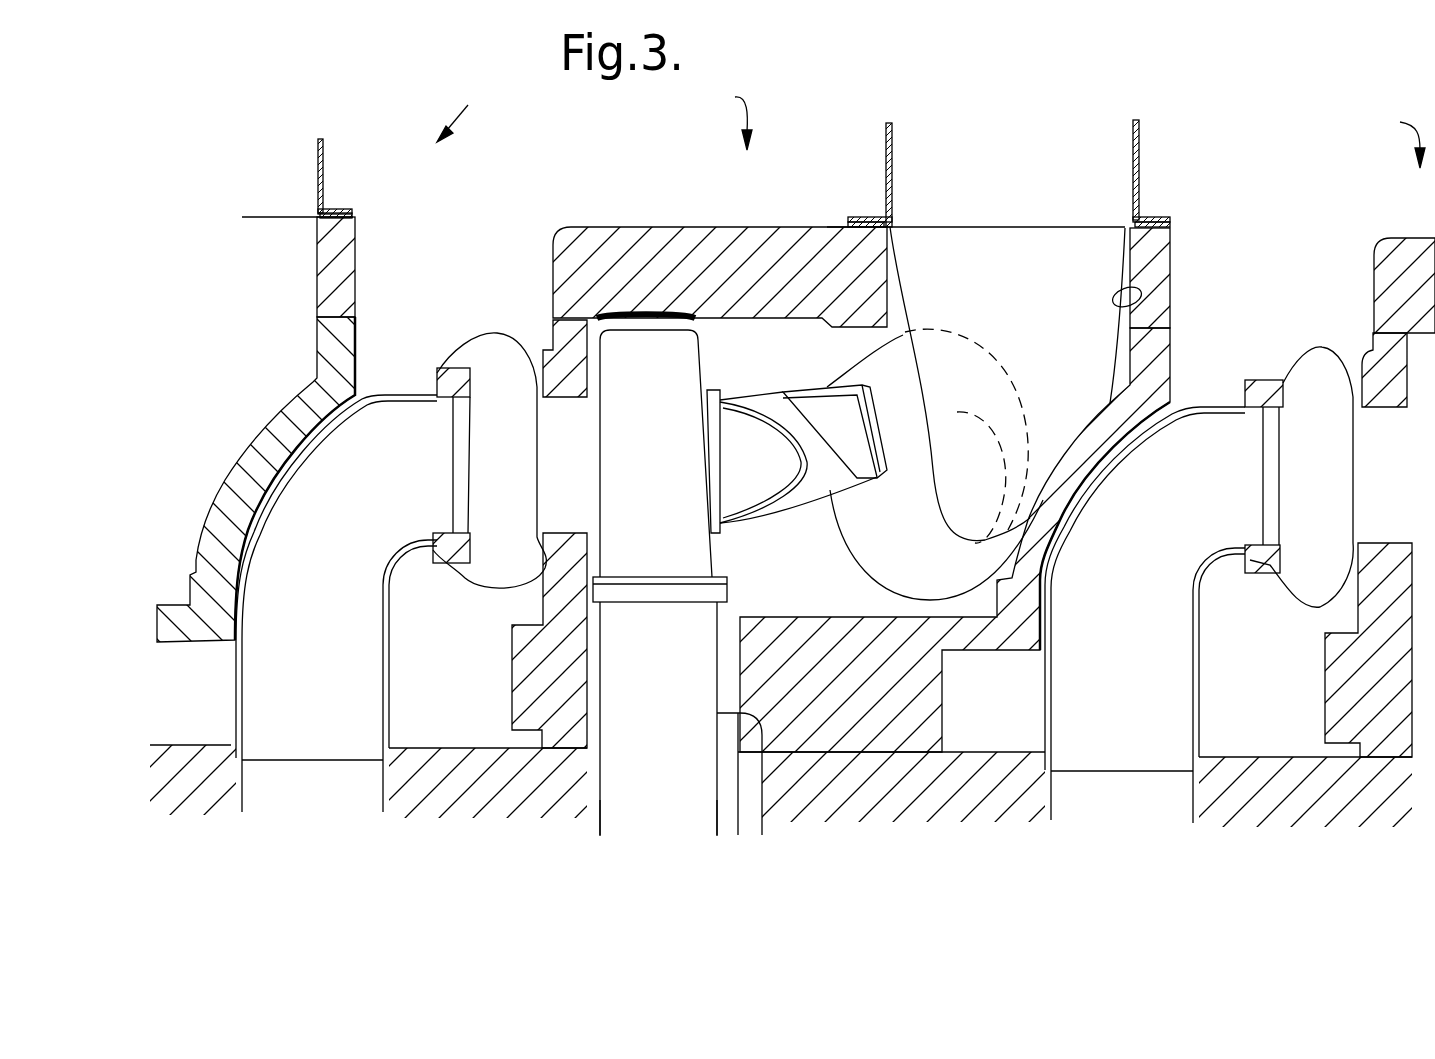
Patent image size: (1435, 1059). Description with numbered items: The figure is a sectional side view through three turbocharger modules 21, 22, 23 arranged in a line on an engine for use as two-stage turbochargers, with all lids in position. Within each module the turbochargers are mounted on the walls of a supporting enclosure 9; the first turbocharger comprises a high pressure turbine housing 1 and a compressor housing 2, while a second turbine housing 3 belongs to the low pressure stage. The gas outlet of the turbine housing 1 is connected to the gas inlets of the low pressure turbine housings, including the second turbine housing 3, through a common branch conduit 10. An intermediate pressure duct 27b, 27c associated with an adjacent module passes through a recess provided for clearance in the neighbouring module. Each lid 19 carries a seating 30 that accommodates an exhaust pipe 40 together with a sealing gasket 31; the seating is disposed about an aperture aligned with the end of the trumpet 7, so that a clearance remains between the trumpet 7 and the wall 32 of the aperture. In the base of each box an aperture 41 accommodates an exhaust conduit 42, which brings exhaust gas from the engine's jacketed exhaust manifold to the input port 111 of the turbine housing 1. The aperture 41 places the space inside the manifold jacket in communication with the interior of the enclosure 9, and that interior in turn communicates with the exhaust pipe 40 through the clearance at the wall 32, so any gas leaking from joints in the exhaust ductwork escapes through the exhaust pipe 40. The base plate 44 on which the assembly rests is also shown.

The turbine housing 1 is at (655, 477).
The compressor housing 2 is at (513, 474).
The second turbine housing 3 is at (904, 539).
The trumpet 7 is at (1022, 316).
The supporting enclosure 9 is at (362, 332).
The branch conduit 10 is at (843, 455).
The lid 19 is at (355, 268).
The turbocharger module 21 is at (466, 111).
The turbocharger module 22 is at (728, 117).
The turbocharger module 23 is at (1398, 131).
The intermediate pressure duct 27b is at (352, 578).
The intermediate pressure duct 27c is at (1160, 585).
The seating 30 is at (357, 217).
The sealing gasket 31 is at (338, 206).
The wall of the aperture 32 is at (1135, 290).
The exhaust pipe 40 is at (325, 158).
The aperture 41 is at (596, 822).
The exhaust conduit 42 is at (756, 800).
The base plate 44 is at (492, 853).
The input port 111 is at (690, 578).